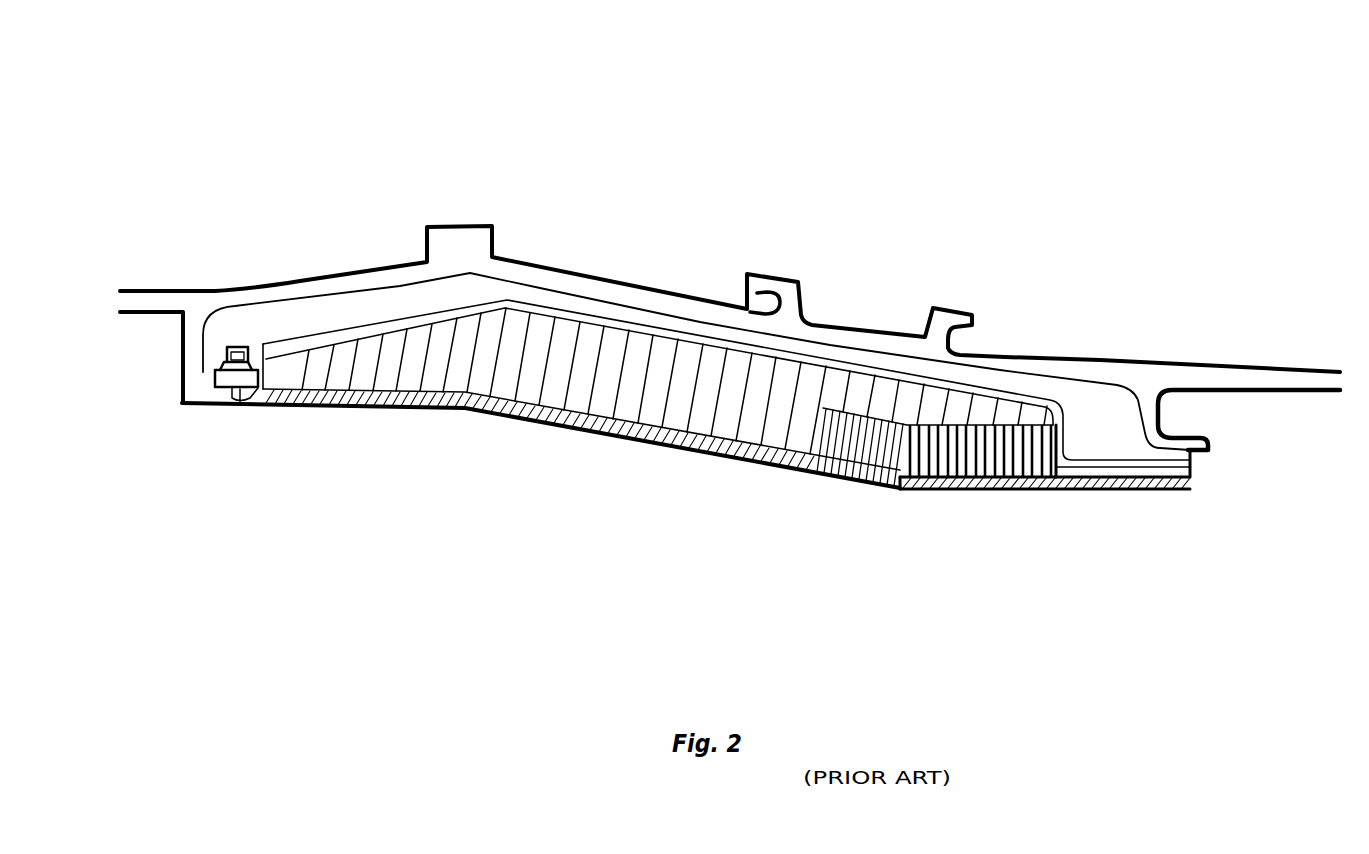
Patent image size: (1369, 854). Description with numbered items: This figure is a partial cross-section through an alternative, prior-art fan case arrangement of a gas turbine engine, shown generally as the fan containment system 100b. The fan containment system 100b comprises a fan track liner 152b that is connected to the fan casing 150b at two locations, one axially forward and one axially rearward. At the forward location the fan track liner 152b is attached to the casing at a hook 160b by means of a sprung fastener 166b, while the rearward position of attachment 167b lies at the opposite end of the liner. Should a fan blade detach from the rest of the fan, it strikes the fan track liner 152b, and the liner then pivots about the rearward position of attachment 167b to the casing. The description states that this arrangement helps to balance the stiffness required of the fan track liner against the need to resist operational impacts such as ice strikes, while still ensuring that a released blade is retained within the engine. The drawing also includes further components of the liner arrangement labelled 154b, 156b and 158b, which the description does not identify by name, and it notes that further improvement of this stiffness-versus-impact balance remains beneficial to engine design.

The fan containment system 100b is at (1148, 266).
The fan casing 150b is at (508, 273).
The fan track liner 152b is at (330, 330).
The bottom wall 154b is at (673, 447).
The tube plate 156b is at (603, 420).
The tubes 158b is at (710, 407).
The hook 160b is at (213, 393).
The sprung fastener 166b is at (235, 400).
The rearward position of attachment 167b is at (1190, 452).